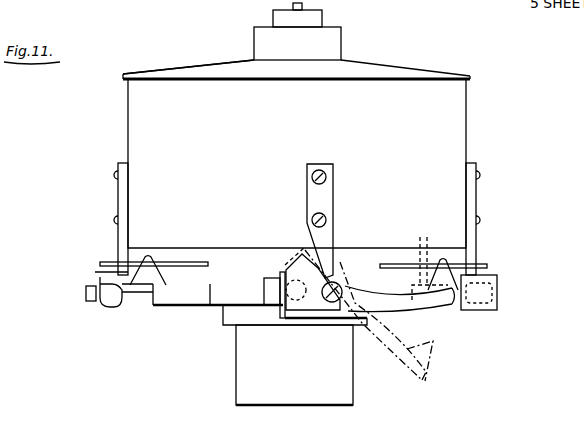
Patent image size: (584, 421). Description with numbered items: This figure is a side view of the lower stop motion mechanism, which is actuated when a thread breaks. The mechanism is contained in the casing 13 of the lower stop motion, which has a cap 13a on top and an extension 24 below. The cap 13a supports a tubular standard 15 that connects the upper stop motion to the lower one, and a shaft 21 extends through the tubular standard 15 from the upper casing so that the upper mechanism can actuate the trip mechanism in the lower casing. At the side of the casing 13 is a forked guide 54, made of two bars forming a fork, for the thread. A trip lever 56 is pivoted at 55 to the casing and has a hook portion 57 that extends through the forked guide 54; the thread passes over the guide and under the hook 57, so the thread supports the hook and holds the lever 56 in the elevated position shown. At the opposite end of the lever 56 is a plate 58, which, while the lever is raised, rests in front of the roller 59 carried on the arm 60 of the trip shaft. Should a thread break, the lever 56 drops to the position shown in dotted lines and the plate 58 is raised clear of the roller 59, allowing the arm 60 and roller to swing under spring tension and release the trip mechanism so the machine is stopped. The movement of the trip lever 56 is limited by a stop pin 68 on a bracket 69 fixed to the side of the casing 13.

The casing of the lower stop motion 13 is at (296, 154).
The cap of the lower stop motion 13a is at (205, 64).
The tubular standard 15 is at (321, 16).
The shaft 21 is at (292, 7).
The extension of the casing 24 is at (225, 325).
The forked guide 54 is at (190, 261).
The pivot 55 is at (343, 284).
The trip lever 56 is at (108, 308).
The hook portion 57 is at (151, 257).
The plate 58 is at (283, 320).
The roller 59 is at (484, 316).
The arm 60 is at (376, 315).
The stop pin 68 is at (100, 272).
The bracket 69 is at (119, 203).